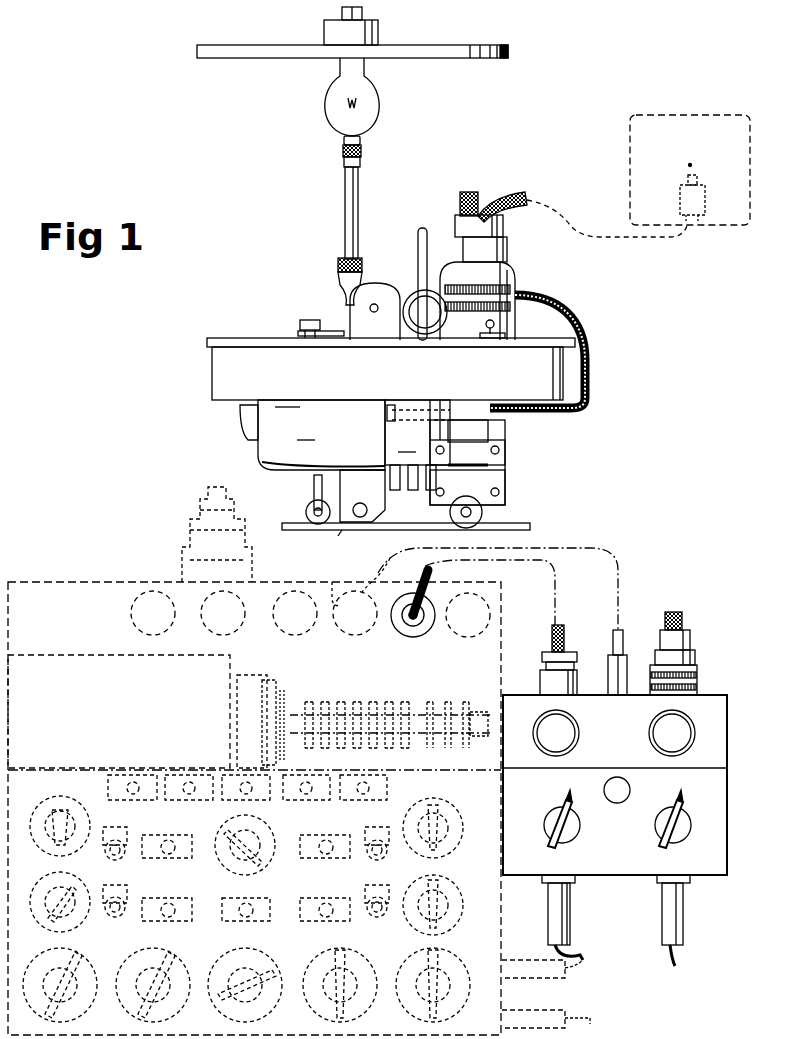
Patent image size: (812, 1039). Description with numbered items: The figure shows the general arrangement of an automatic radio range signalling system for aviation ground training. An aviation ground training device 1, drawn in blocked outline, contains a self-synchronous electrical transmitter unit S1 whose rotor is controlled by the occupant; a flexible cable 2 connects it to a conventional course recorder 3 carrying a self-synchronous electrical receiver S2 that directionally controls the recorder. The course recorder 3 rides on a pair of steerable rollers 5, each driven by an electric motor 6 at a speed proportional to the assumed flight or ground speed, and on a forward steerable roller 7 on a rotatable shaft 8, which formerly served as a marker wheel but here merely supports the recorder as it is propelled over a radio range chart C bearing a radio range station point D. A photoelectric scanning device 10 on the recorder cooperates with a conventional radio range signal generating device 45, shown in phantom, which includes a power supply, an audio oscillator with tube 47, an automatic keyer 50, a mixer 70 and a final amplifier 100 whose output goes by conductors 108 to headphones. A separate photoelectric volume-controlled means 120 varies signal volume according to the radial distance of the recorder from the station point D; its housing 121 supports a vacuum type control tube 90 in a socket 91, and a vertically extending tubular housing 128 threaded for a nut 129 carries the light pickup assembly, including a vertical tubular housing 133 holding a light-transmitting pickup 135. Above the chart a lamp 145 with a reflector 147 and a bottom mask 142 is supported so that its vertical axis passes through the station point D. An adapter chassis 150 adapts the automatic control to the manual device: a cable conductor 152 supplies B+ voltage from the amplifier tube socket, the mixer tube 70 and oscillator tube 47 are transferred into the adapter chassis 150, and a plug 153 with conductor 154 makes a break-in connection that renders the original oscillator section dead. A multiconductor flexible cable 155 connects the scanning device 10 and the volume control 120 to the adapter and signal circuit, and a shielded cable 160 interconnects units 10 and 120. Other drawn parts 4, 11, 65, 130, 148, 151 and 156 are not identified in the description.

The aviation ground training device 1 is at (630, 145).
The flexible cable 2 is at (520, 192).
The course recorder 3 is at (250, 328).
The housing 4 is at (212, 376).
The steerable rollers 5 is at (482, 512).
The electric motor 6 is at (490, 446).
The forward steerable roller 7 is at (306, 510).
The rotatable shaft 8 is at (314, 485).
The photoelectric scanning device 10 is at (246, 452).
The motor housing 11 is at (321, 435).
The radio range signal generating device 45 is at (96, 572).
The audio oscillator tube 47 is at (490, 612).
The automatic keyer 50 is at (394, 695).
The control knob 65 is at (450, 1010).
The mixer tube 70 is at (578, 725).
The vacuum type control tube 90 is at (435, 333).
The socket 91 is at (420, 340).
The final amplifier 100 is at (340, 626).
The conductors 108 is at (580, 1010).
The photoelectric volume-controlled means 120 is at (414, 276).
The housing 121 is at (450, 335).
The vertically extending tubular housing 128 is at (340, 285).
The nut 129 is at (343, 152).
The lamp post 130 is at (358, 232).
The vertical tubular housing 133 is at (360, 163).
The light-transmitting pickup 135 is at (361, 150).
The mask 142 is at (360, 140).
The lamp 145 is at (381, 108).
The reflector 147 is at (472, 58).
The reflector mount 148 is at (378, 32).
The adapter chassis 150 is at (746, 725).
The connector wire 151 is at (332, 582).
The cable conductor 152 is at (380, 558).
The plug 153 is at (413, 637).
The conductor 154 is at (564, 632).
The multiconductor flexible cable 155 is at (460, 182).
The connector block 156 is at (455, 225).
The shielded cable 160 is at (586, 322).
The chart C is at (530, 527).
The radio range station point D is at (338, 530).
The self-synchronous electrical transmitter unit S1 is at (705, 190).
The self-synchronous electrical receiver S2 is at (417, 445).